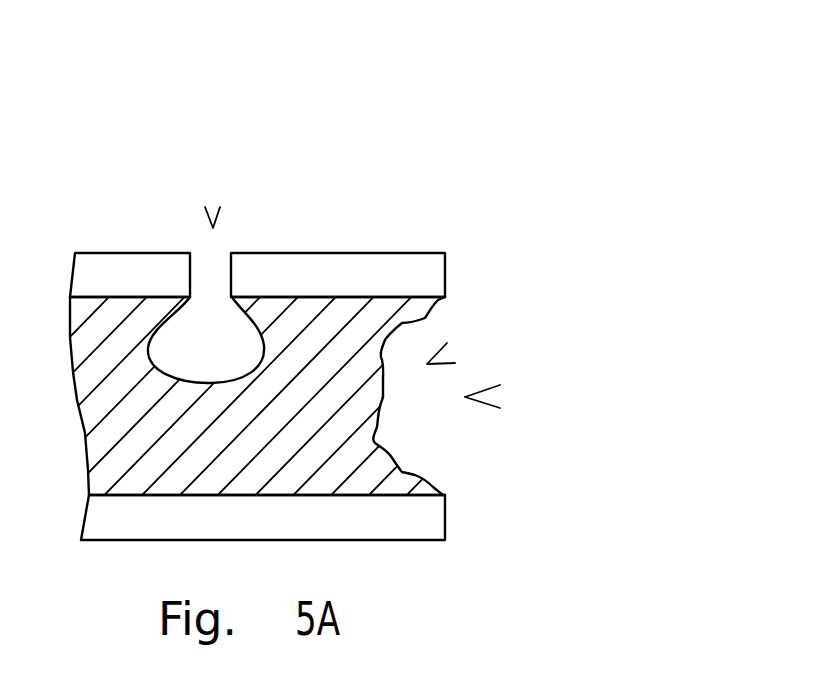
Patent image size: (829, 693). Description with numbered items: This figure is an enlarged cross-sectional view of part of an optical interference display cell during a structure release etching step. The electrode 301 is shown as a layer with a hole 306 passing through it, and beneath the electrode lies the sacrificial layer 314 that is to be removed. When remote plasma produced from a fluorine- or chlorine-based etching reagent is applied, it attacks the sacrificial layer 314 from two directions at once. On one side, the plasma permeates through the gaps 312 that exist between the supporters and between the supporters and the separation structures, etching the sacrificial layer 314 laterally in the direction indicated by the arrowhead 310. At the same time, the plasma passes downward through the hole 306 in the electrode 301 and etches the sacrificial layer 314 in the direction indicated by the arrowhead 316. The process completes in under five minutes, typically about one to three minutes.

The electrode 301 is at (402, 268).
The hole 306 is at (233, 273).
The arrowhead 310 is at (465, 397).
The gaps 312 is at (427, 364).
The sacrificial layer 314 is at (368, 472).
The arrowhead 316 is at (213, 228).